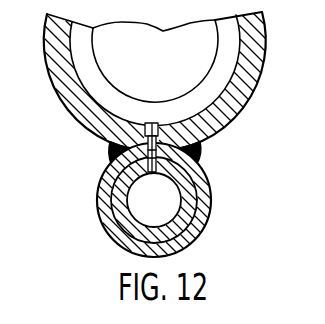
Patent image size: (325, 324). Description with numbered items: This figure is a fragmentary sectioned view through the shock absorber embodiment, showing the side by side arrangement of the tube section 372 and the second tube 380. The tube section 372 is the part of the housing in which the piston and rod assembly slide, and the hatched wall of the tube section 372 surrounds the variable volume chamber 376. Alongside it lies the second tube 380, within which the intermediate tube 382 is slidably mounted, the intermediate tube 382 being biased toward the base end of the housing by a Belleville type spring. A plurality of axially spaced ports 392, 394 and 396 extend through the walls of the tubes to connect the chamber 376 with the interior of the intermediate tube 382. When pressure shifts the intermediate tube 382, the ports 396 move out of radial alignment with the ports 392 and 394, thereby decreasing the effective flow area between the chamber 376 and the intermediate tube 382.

The tube section 372 is at (265, 50).
The variable volume chamber 376 is at (155, 61).
The second tube 380 is at (108, 231).
The intermediate tube 382 is at (186, 208).
The port 392 is at (158, 133).
The port 394 is at (157, 149).
The port 396 is at (148, 157).